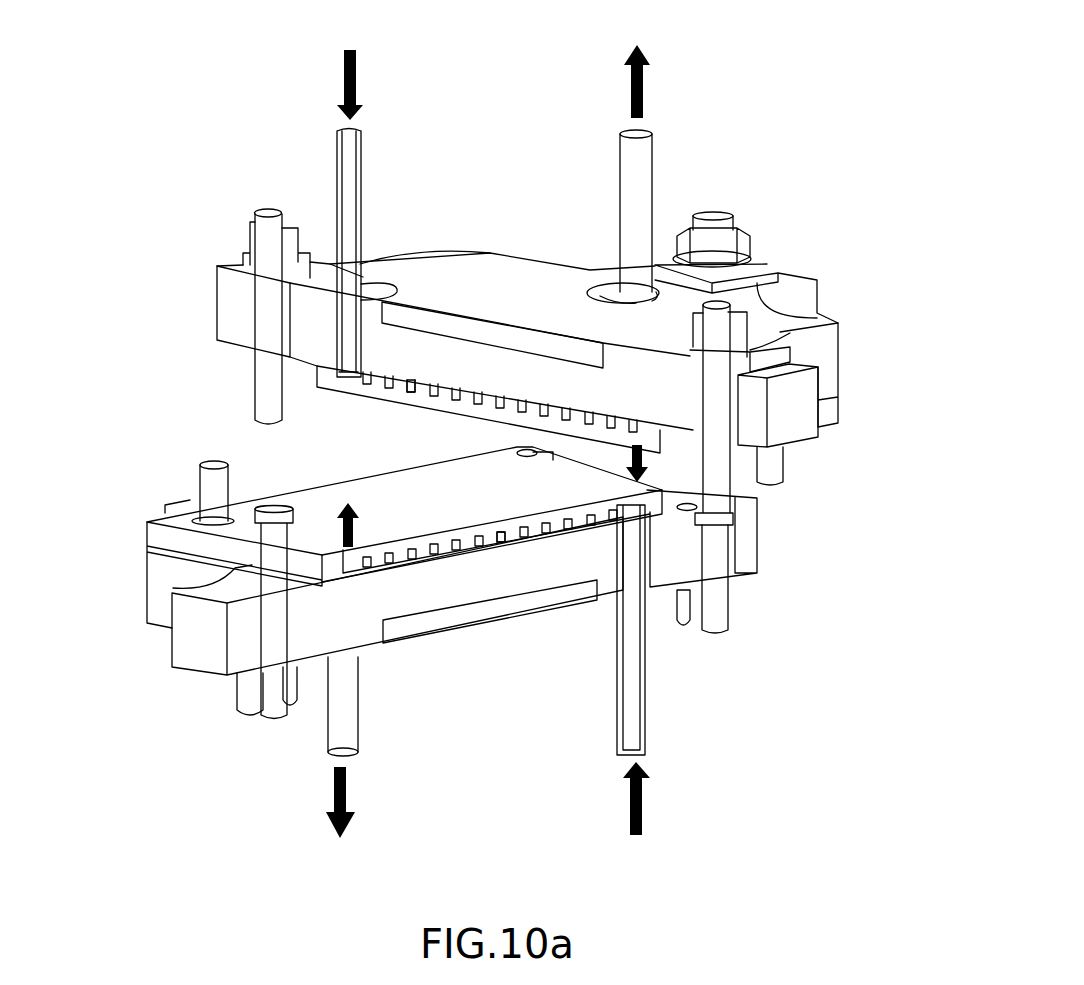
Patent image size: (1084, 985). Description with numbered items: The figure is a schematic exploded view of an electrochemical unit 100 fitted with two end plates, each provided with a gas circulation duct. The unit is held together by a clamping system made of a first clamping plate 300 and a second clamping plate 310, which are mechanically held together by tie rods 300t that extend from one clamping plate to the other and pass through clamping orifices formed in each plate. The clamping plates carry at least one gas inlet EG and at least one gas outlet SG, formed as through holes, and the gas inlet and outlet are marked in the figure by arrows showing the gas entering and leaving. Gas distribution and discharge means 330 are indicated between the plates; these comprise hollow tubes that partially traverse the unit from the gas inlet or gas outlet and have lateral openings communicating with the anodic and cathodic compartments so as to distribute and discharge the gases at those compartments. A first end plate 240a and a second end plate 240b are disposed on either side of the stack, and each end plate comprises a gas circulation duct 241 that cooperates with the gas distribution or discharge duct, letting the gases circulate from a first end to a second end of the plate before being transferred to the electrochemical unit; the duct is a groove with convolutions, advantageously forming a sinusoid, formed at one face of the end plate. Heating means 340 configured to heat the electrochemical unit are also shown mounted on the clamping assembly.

The electrochemical unit 100 is at (130, 200).
The gas circulation duct 241 is at (414, 380).
The first end plate 240a is at (447, 552).
The second end plate 240b is at (513, 398).
The first clamping plate 300 is at (155, 598).
The tie rods 300t is at (252, 432).
The second clamping plate 310 is at (828, 352).
The gas distribution and/or discharge means 330 is at (620, 458).
The heating means 340 is at (775, 321).